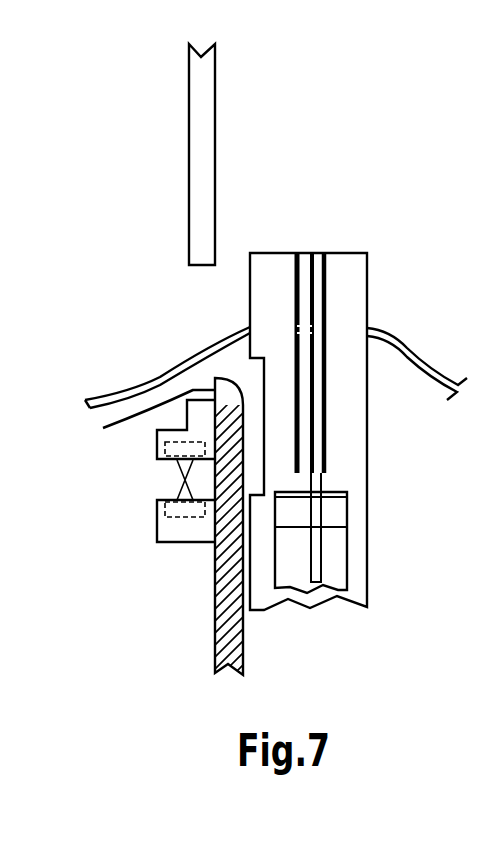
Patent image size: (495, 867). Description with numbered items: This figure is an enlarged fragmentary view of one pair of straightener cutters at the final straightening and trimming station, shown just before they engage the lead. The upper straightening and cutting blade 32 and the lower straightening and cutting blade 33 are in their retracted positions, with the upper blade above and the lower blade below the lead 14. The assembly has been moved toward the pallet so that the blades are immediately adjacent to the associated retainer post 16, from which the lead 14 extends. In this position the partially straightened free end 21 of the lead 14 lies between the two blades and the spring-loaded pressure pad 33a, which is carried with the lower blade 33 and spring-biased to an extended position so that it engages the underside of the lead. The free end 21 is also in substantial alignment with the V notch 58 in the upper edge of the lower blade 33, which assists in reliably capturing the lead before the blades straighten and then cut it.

The upper straightening and cutting blade 32 is at (205, 158).
The retainer post 16 is at (347, 433).
The lead 14 is at (410, 350).
The partially straightened free end 21 is at (132, 385).
The V notch 58 is at (142, 418).
The lower straightening and cutting blade 33 is at (228, 560).
The spring-loaded pressure pad 33a is at (160, 432).